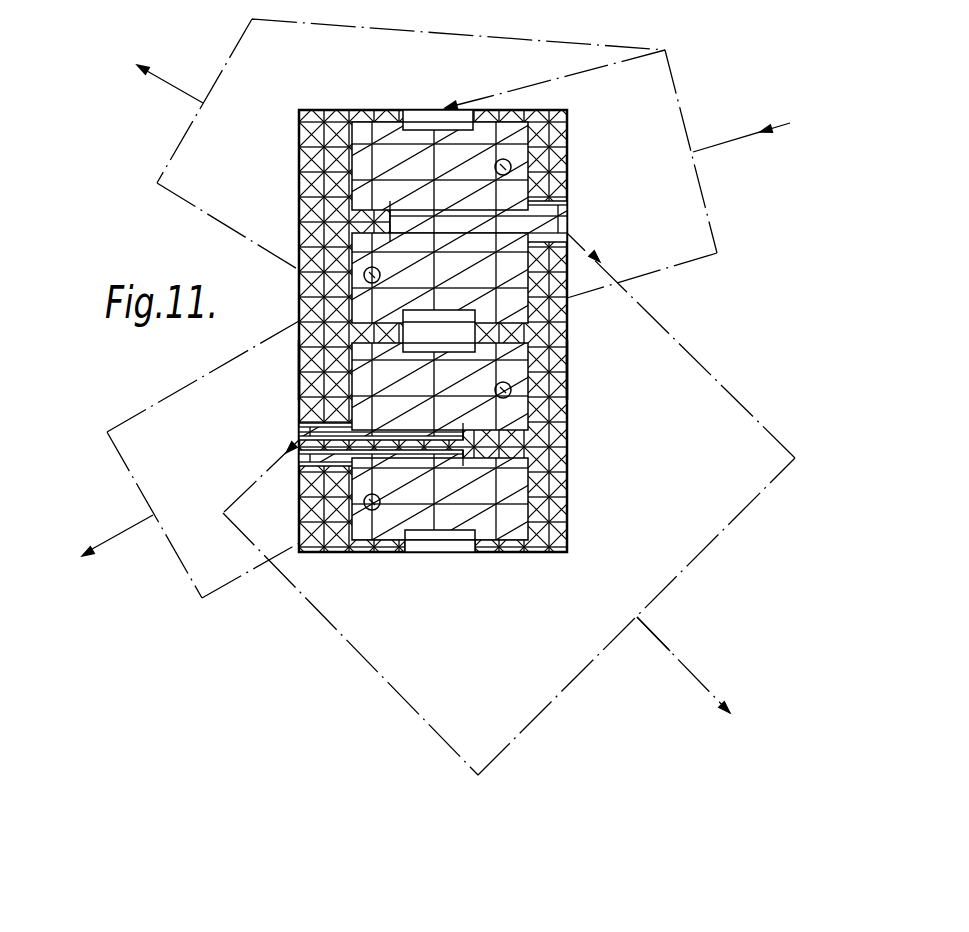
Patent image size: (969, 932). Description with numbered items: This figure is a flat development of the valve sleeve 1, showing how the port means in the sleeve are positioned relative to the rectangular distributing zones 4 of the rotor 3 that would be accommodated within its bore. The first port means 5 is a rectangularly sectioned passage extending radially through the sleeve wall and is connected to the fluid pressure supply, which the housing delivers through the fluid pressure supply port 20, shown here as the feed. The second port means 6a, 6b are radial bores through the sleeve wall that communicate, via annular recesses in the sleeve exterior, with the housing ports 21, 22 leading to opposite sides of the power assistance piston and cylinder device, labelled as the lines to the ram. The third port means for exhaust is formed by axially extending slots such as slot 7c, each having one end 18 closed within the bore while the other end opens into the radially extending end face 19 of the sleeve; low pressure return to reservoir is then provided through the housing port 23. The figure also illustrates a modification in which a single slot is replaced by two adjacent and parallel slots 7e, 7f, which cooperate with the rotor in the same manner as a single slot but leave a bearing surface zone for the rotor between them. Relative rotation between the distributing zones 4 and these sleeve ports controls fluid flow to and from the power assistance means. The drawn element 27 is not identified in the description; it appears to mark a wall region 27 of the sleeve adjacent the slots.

The sleeve 1 is at (299, 222).
The rotor 3 is at (427, 553).
The distributing zones 4 is at (422, 120).
The first port means 5 is at (461, 112).
The second port means 6a is at (380, 274).
The second port means 6b is at (495, 167).
The slot 7c is at (567, 220).
The slot 7e is at (312, 425).
The slot 7f is at (298, 460).
The closed end of slot 18 is at (388, 215).
The end face of sleeve 19 is at (299, 372).
The fluid pressure supply port 20 is at (742, 147).
The port 21 is at (122, 552).
The port 22 is at (150, 88).
The port 23 is at (672, 660).
The housing wall 27 is at (567, 368).